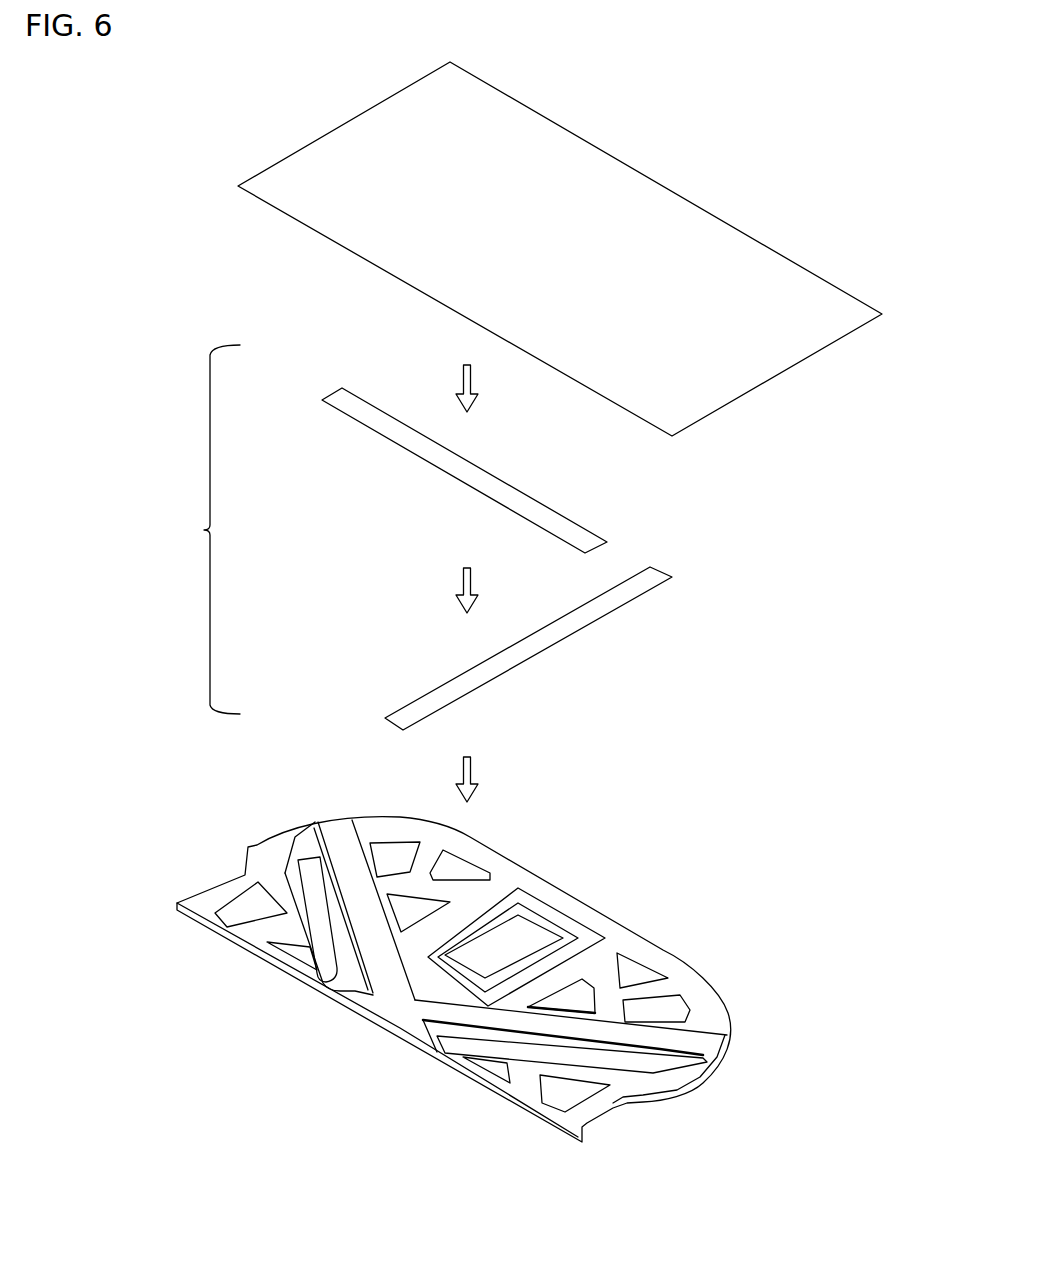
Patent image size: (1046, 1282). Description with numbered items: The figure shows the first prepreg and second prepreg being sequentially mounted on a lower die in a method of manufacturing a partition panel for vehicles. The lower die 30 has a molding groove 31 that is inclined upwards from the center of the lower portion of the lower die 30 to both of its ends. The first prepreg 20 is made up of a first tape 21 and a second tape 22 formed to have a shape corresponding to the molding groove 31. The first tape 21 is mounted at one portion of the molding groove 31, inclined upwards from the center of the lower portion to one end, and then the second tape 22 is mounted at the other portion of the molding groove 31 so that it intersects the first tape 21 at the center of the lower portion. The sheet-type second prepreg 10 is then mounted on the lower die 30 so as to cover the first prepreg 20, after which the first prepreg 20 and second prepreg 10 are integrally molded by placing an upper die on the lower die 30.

The second prepreg 10 is at (722, 228).
The first prepreg 20 is at (205, 530).
The first tape 21 is at (660, 570).
The second tape 22 is at (336, 395).
The lower die 30 is at (482, 945).
The molding groove 31 is at (335, 830).